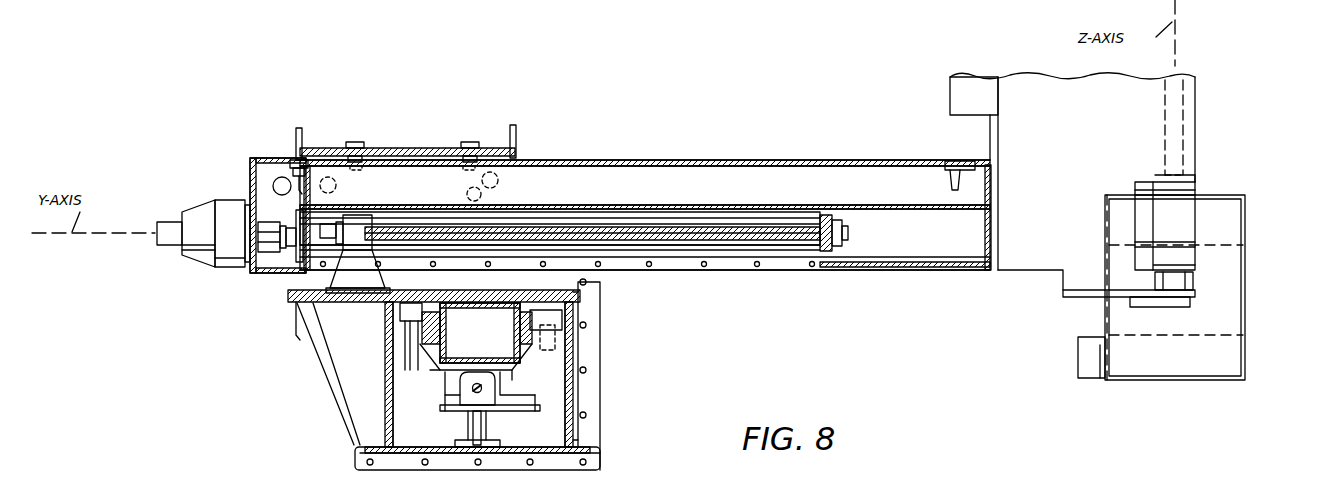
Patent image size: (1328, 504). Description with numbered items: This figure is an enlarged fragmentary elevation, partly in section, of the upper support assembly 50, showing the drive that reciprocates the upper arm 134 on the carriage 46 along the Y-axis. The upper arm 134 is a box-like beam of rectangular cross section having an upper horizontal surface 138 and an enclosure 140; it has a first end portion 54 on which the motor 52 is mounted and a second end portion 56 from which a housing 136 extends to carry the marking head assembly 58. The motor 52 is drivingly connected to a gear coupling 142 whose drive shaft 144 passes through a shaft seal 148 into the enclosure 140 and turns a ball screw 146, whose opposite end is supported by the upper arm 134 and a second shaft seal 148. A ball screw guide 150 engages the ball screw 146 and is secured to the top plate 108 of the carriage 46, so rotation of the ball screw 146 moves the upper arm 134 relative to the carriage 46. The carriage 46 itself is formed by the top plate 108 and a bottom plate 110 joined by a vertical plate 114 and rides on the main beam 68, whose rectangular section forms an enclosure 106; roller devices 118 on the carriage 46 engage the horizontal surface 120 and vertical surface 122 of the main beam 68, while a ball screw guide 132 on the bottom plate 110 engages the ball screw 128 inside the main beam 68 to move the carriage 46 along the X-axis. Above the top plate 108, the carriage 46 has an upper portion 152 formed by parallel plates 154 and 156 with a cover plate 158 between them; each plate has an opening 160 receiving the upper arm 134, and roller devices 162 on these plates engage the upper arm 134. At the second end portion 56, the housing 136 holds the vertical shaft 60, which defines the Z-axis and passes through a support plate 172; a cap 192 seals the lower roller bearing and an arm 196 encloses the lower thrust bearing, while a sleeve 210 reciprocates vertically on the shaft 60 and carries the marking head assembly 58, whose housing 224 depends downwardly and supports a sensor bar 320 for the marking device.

The carriage 46 is at (612, 340).
The upper support assembly 50 is at (641, 130).
The motor 52 is at (222, 266).
The first end portion 54 is at (262, 158).
The second end portion 56 is at (972, 162).
The marking head assembly 58 is at (1265, 213).
The shaft 60 is at (1180, 117).
The main beam 68 is at (472, 310).
The enclosure 106 is at (514, 400).
The top plate 108 is at (330, 304).
The bottom plate 110 is at (560, 442).
The vertical plate 114 is at (355, 414).
The roller devices 118 is at (562, 308).
The surface 120 is at (535, 332).
The surface 122 is at (520, 314).
The ball screw 128 is at (460, 392).
The ball screw guide 132 is at (470, 393).
The upper arm 134 is at (790, 265).
The housing 136 is at (1040, 265).
The upper horizontal surface 138 is at (682, 160).
The enclosure 140 is at (726, 250).
The gear coupling 142 is at (268, 256).
The drive shaft 144 is at (290, 258).
The ball screw 146 is at (677, 255).
The shaft seal 148 is at (296, 222).
The ball screw guide 150 is at (358, 232).
The upper portion 152 is at (290, 126).
The plate 154 is at (294, 138).
The plate 156 is at (518, 134).
The cover plate 158 is at (418, 148).
The opening 160 is at (524, 162).
The roller devices 162 is at (356, 147).
The support plate 172 is at (1085, 294).
The cap 192 is at (1142, 302).
The arm 196 is at (1195, 280).
The sleeve 210 is at (1196, 186).
The housing 224 is at (1245, 325).
The sensor bar 320 is at (1078, 356).